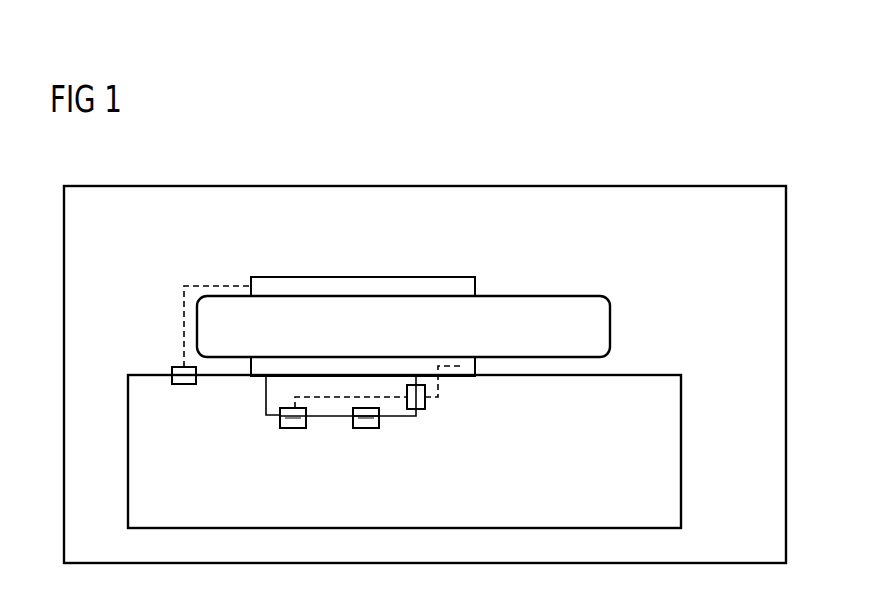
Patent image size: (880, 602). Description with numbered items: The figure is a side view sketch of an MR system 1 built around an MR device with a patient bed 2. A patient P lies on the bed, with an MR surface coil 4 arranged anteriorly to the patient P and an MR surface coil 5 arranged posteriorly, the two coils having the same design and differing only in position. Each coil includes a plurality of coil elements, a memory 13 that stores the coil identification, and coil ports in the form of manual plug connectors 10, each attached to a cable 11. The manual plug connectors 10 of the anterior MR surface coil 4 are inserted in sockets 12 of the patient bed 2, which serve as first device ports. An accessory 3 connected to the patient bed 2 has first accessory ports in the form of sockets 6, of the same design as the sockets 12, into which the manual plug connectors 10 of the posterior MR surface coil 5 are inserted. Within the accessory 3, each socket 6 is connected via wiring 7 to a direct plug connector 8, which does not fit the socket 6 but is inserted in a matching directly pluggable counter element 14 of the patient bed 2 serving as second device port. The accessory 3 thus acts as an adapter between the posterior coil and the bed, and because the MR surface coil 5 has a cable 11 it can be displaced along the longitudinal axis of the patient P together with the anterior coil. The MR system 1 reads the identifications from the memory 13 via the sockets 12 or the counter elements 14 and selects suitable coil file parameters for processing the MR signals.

The MR system 1 is at (598, 186).
The patient bed 2 is at (681, 432).
The accessory 3 is at (266, 388).
The MR surface coil 4 is at (310, 278).
The MR surface coil 5 is at (402, 363).
The socket 6 is at (410, 413).
The wiring 7 is at (330, 398).
The direct plug connector 8 is at (280, 412).
The manual plug connector 10 is at (183, 367).
The cable 11 is at (203, 285).
The socket 12 is at (183, 385).
The memory 13 is at (364, 293).
The directly pluggable counter element 14 is at (290, 428).
The patient P is at (610, 318).